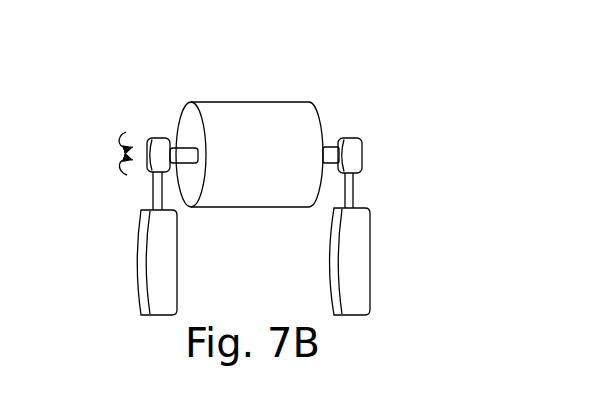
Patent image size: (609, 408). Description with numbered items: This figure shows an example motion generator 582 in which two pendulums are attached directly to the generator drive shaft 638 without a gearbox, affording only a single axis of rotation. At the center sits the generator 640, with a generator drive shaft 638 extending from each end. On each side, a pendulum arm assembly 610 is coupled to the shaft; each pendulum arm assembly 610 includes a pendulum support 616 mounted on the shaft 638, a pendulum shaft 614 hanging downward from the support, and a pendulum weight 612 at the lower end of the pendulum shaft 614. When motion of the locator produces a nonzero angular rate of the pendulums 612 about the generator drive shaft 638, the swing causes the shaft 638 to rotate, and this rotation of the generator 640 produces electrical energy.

The motion generator 582 is at (360, 62).
The generator 640 is at (230, 100).
The generator drive shaft 638 is at (186, 158).
The pendulum support 616 is at (155, 134).
The pendulum shaft 614 is at (152, 188).
The pendulum weight 612 is at (135, 263).
The pendulum arm assembly 610 is at (100, 173).